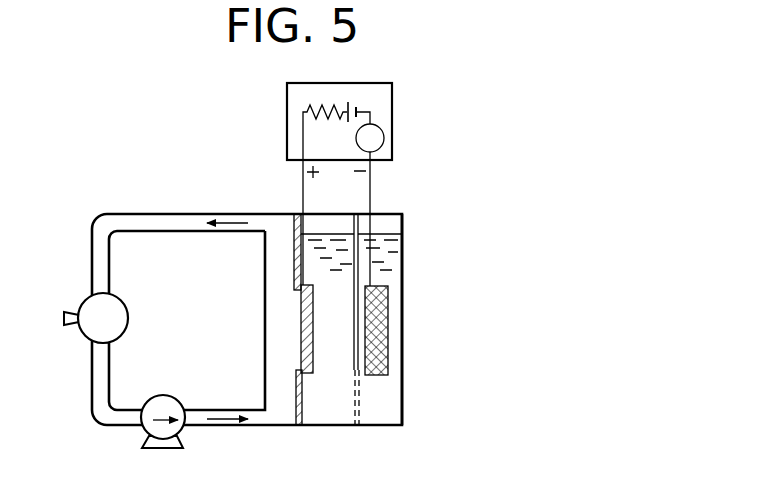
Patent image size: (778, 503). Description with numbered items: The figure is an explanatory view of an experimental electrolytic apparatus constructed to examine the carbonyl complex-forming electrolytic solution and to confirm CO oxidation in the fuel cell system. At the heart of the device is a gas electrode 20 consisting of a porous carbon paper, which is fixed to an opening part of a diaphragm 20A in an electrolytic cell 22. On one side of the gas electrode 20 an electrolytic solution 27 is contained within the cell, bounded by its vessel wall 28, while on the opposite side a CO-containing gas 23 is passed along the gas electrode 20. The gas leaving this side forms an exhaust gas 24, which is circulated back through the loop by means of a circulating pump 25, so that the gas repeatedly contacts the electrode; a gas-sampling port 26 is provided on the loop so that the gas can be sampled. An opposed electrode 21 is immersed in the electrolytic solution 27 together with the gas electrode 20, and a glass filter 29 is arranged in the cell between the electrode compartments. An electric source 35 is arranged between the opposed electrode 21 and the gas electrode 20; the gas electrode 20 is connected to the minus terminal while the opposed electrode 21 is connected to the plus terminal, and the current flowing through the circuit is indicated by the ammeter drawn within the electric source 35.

The gas electrode 20 is at (300, 330).
The diaphragm 20A is at (298, 405).
The opposed electrode 21 is at (390, 326).
The electrolytic cell 22 is at (390, 208).
The CO-containing gas 23 is at (225, 425).
The exhaust gas 24 is at (232, 213).
The pump 25 is at (160, 425).
The gas-sampling port 26 is at (76, 313).
The electrolytic solution 27 is at (330, 418).
The cell vessel wall 28 is at (403, 404).
The glass filter 29 is at (364, 412).
The electric source 35 is at (392, 93).